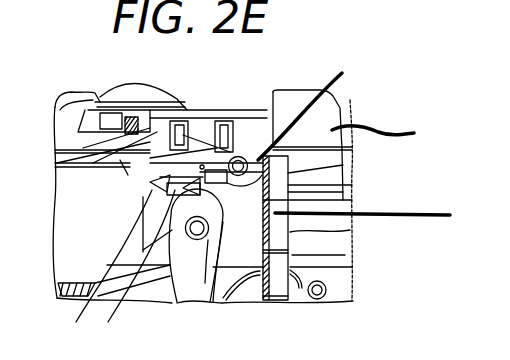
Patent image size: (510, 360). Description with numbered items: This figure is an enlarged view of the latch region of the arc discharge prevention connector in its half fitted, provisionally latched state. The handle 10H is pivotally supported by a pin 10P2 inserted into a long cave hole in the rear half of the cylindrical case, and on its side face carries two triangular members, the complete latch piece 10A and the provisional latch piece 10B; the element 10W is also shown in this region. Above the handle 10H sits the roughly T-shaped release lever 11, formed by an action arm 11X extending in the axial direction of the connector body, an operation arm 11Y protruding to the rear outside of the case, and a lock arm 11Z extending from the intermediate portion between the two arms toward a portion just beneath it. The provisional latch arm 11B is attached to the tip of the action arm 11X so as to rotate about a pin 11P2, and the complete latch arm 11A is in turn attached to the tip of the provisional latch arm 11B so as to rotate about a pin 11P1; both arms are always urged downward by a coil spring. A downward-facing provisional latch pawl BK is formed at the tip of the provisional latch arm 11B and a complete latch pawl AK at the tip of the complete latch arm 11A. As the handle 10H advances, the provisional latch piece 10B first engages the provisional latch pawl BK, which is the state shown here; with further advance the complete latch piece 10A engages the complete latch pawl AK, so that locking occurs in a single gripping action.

The complete latch pawl AK is at (125, 162).
The complete latch arm 11A is at (177, 110).
The provisional latch arm 11B is at (231, 124).
The pin 11P1 is at (188, 126).
The pin 11P2 is at (247, 156).
The action arm 11X is at (319, 111).
The operation arm 11Y is at (391, 135).
The lock arm 11Z is at (377, 216).
The provisional latch pawl BK is at (350, 197).
The release lever 11 is at (280, 228).
The handle 10H is at (335, 258).
The complete latch piece 10A is at (100, 262).
The provisional latch piece 10B is at (129, 262).
The lever 10W is at (182, 278).
The pin 10P2 is at (212, 265).